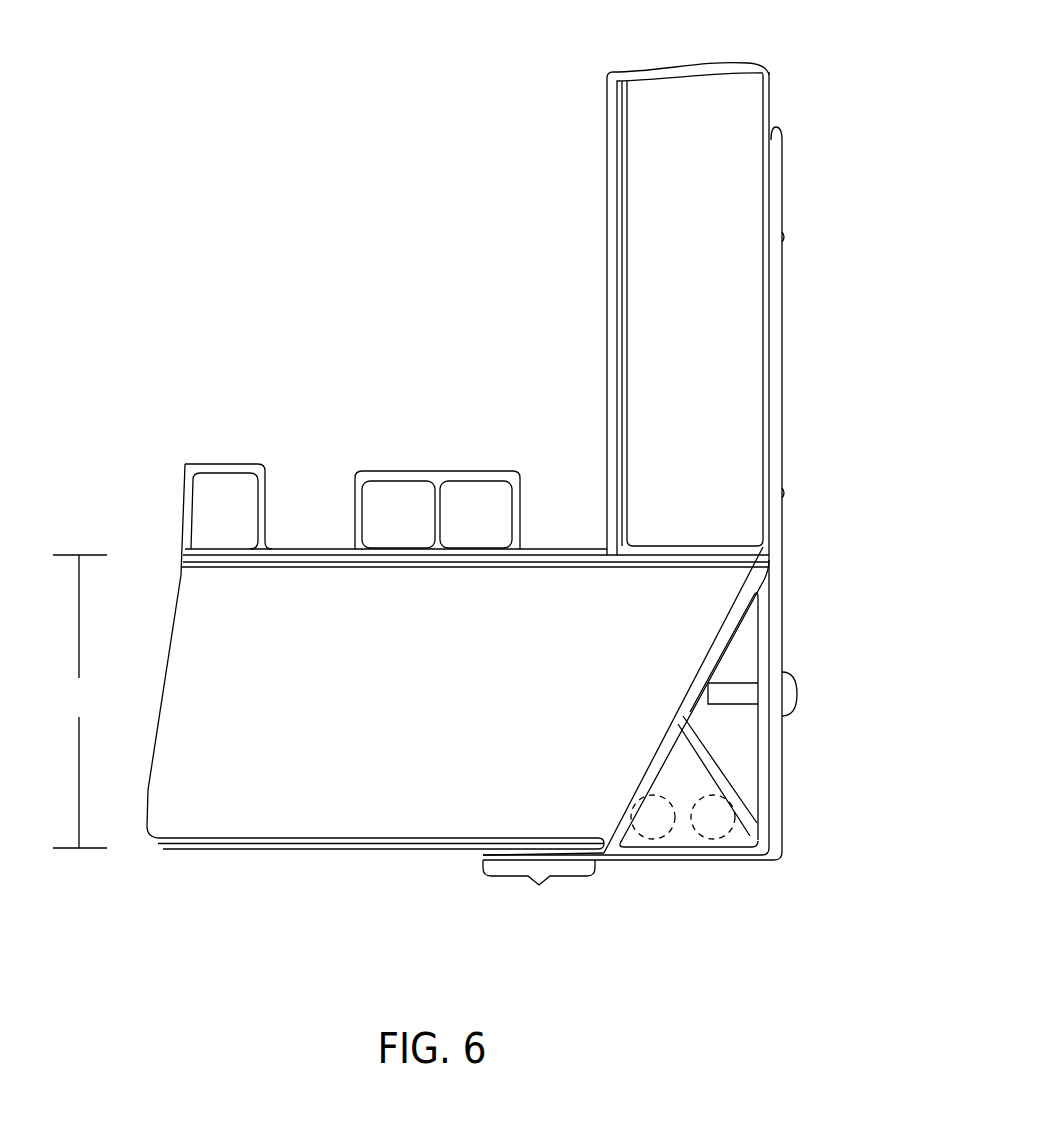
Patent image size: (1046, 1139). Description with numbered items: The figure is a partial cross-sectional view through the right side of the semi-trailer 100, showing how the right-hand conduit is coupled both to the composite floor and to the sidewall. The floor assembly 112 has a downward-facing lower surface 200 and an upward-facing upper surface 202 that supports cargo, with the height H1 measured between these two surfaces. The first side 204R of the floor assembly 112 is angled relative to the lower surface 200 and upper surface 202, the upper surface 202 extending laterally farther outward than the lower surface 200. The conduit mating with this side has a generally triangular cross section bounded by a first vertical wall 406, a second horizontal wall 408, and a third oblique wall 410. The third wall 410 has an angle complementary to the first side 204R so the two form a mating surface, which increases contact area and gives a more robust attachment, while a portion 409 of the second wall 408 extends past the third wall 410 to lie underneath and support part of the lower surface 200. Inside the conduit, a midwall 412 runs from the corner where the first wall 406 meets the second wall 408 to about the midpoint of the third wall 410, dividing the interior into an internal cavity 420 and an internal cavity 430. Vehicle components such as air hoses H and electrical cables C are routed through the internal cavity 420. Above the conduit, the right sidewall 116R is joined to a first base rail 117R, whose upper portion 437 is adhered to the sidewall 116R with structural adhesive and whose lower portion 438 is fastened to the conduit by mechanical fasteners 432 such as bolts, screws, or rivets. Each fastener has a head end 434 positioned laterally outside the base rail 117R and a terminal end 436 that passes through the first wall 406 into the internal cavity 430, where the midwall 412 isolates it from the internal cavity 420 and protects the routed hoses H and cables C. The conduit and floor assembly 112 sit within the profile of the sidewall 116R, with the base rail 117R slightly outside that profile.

The semi-trailer 100 is at (232, 107).
The floor assembly 112 is at (304, 422).
The right sidewall 116R is at (669, 323).
The first base rail 117R is at (786, 372).
The lower surface 200 is at (208, 850).
The upper surface 202 is at (573, 553).
The first side 204R is at (717, 633).
The first vertical wall 406 is at (745, 781).
The second horizontal wall 408 is at (691, 870).
The portion of second wall 409 is at (539, 891).
The third oblique wall 410 is at (722, 669).
The midwall 412 is at (691, 740).
The internal cavity 420 is at (667, 789).
The internal cavity 430 is at (711, 742).
The mechanical fasteners 432 is at (811, 716).
The head end 434 is at (797, 690).
The terminal end 436 is at (708, 692).
The upper portion 437 is at (815, 216).
The lower portion 438 is at (818, 544).
The height H1 is at (80, 701).
The air hoses H is at (650, 839).
The electrical cables C is at (720, 839).